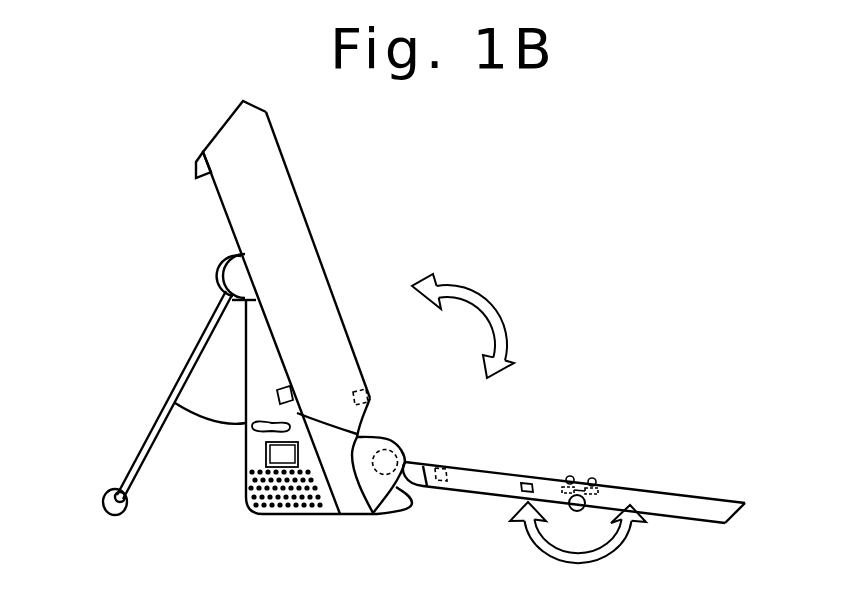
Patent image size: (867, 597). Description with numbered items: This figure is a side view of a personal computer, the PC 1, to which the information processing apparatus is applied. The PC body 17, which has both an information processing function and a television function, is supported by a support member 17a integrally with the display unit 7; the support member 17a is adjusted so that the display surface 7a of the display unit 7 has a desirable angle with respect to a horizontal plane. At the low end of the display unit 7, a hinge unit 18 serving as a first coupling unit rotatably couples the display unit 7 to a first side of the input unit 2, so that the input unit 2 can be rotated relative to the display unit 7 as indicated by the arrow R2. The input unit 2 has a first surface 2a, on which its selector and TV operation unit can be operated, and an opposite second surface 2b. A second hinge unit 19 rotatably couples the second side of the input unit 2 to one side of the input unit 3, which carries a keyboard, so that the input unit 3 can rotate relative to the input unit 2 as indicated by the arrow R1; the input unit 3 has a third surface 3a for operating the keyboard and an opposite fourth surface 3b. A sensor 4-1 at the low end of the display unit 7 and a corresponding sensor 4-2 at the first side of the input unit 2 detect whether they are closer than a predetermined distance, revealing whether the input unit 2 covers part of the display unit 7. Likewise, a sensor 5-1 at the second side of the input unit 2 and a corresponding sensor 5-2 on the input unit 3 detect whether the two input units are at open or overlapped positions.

The PC 1 is at (671, 188).
The display unit 7 is at (253, 146).
The display surface 7a is at (305, 218).
The PC body 17 is at (260, 365).
The support member 17a is at (132, 467).
The sensor 4-1 is at (368, 390).
The sensor 4-2 is at (445, 465).
The hinge unit 18 is at (393, 443).
The input unit 2 is at (512, 483).
The first surface 2a is at (485, 468).
The second surface 2b is at (460, 490).
The hinge unit 19 is at (569, 505).
The sensor 5-1 is at (568, 472).
The sensor 5-2 is at (592, 475).
The input unit 3 is at (665, 507).
The third surface 3a is at (707, 497).
The fourth surface 3b is at (698, 520).
The arrow R1 is at (587, 535).
The arrow R2 is at (476, 326).